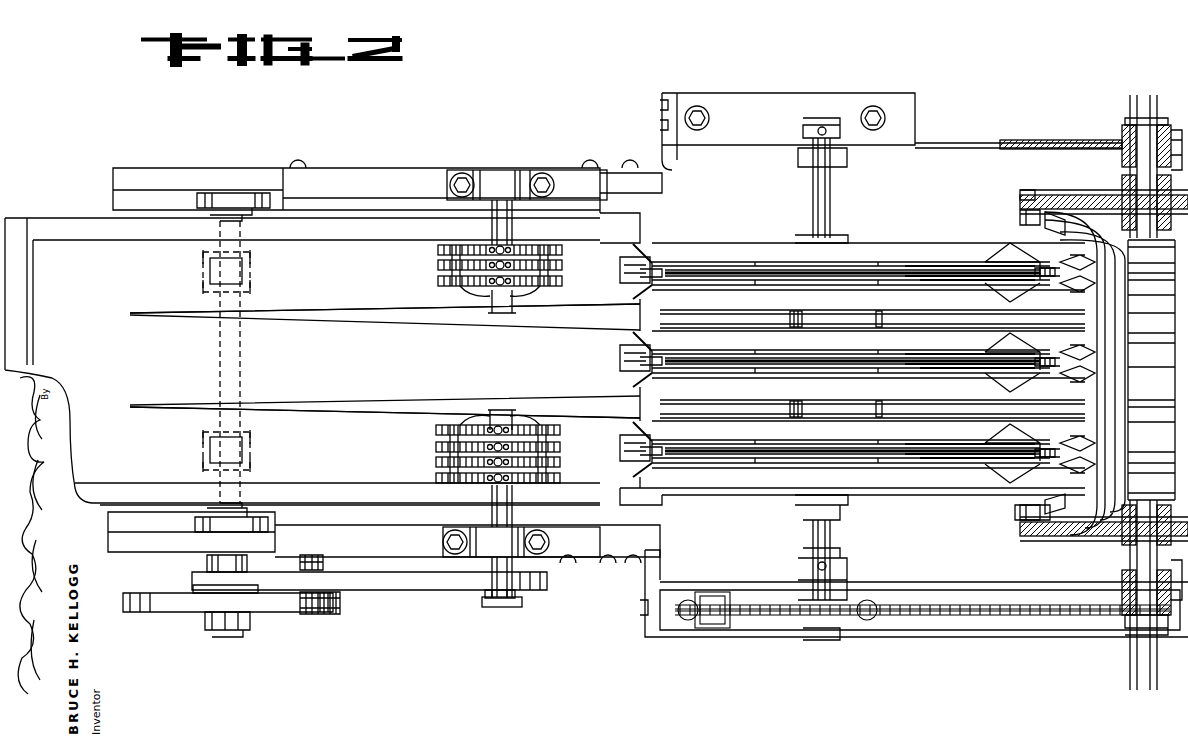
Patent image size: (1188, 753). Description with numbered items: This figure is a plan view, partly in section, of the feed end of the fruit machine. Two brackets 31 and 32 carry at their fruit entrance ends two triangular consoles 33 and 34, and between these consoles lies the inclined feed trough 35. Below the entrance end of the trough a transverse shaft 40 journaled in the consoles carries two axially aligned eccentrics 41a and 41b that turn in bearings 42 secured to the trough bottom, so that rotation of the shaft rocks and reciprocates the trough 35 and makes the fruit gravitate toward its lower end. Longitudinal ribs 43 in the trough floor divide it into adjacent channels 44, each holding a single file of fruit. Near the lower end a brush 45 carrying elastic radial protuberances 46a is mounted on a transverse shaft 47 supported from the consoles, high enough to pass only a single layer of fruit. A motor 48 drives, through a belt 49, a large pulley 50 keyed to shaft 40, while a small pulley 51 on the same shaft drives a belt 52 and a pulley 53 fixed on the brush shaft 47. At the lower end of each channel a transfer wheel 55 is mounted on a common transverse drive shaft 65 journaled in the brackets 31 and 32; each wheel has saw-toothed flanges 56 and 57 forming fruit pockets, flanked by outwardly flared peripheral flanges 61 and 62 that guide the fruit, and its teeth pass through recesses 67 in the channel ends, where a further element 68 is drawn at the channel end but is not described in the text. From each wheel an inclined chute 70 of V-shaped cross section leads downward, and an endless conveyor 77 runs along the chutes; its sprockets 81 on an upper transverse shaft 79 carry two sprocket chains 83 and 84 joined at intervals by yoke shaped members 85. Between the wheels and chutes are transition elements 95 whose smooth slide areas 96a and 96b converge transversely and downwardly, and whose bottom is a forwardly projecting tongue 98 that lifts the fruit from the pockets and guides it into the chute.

The bracket 31 is at (652, 637).
The bracket 32 is at (962, 145).
The triangular console 33 is at (152, 540).
The triangular console 34 is at (160, 190).
The inclined feed trough 35 is at (302, 361).
The transverse shaft 40 is at (222, 637).
The eccentric 41a is at (215, 272).
The eccentric 41b is at (215, 447).
The bearing 42 is at (205, 280).
The longitudinal rib 43 is at (432, 392).
The channel 44 is at (385, 358).
The brush 45 is at (470, 418).
The radial protuberance 46a is at (438, 281).
The transverse shaft 47 is at (498, 313).
The motor 48 is at (320, 562).
The belt 49 is at (340, 603).
The large pulley 50 is at (138, 612).
The small pulley 51 is at (200, 593).
The belt 52 is at (415, 580).
The pulley 53 is at (515, 598).
The transfer wheel 55 is at (712, 255).
The saw-toothed flange 56 is at (805, 280).
The saw-toothed flange 57 is at (800, 263).
The peripheral flange 61 is at (735, 307).
The peripheral flange 62 is at (897, 218).
The transverse drive shaft 65 is at (820, 118).
The recess 67 is at (620, 275).
The ball joint 68 is at (620, 282).
The inclined chute 70 is at (1162, 355).
The endless conveyor 77 is at (1008, 218).
The upper transverse shaft 79 is at (1145, 122).
The sprocket 81 is at (1078, 195).
The sprocket chain 83 is at (1020, 520).
The sprocket chain 84 is at (1022, 192).
The yoke shaped member 85 is at (1128, 385).
The transition element 95 is at (1045, 252).
The slide area 96a is at (1000, 290).
The slide area 96b is at (1000, 262).
The tongue 98 is at (925, 276).